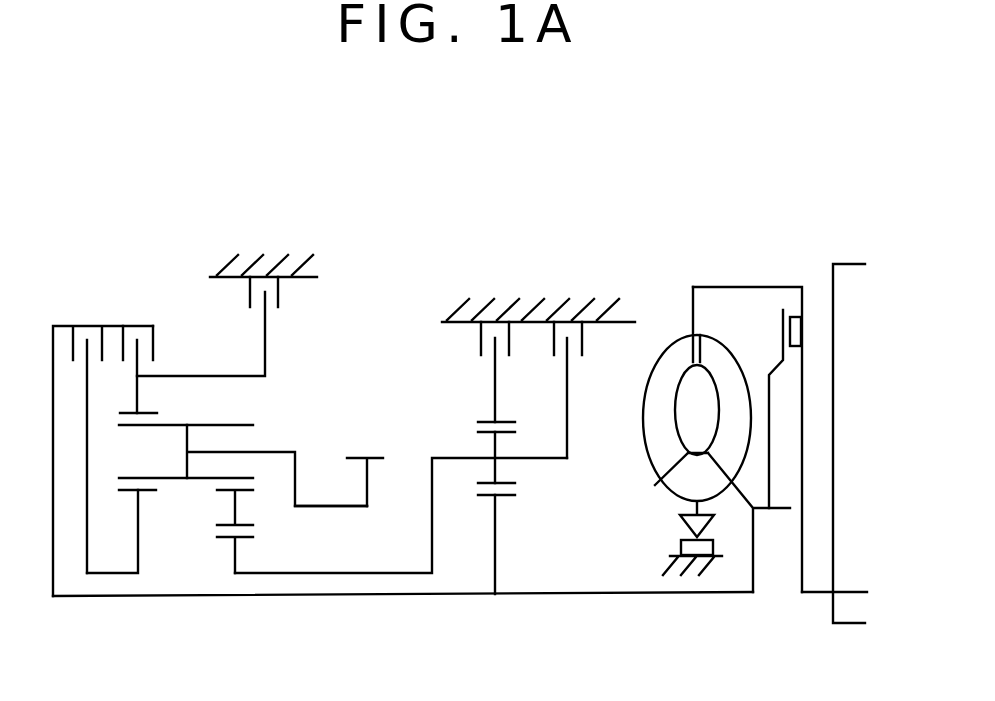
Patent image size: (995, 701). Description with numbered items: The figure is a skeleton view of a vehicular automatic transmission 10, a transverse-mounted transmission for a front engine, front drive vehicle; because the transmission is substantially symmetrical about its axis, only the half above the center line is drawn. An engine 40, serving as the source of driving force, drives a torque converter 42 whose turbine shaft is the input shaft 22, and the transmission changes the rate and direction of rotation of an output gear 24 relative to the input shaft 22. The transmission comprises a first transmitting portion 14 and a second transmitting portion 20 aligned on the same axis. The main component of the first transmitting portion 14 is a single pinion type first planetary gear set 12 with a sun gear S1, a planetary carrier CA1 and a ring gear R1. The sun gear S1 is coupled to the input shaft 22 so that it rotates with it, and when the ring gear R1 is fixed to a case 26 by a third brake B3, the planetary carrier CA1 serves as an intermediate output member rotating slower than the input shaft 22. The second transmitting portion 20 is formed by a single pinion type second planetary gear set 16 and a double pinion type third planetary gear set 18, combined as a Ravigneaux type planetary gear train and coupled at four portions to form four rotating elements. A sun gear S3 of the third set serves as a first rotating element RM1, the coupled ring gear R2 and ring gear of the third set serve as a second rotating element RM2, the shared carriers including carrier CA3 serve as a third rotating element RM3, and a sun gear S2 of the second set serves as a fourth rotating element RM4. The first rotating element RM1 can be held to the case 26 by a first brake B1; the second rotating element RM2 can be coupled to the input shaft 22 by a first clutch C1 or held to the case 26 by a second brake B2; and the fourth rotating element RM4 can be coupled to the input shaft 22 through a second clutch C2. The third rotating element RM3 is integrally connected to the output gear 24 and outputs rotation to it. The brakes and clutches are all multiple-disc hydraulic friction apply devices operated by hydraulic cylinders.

The vehicular automatic transmission 10 is at (604, 217).
The first planetary gear set 12 is at (497, 598).
The first transmitting portion 14 is at (423, 325).
The second planetary gear set 16 is at (137, 585).
The third planetary gear set 18 is at (242, 585).
The second transmitting portion 20 is at (325, 273).
The input shaft 22 is at (600, 593).
The output gear 24 is at (372, 455).
The case 26 is at (262, 268).
The engine 40 is at (852, 266).
The torque converter 42 is at (668, 325).
The first brake B1 is at (591, 345).
The second brake B2 is at (286, 295).
The third brake B3 is at (471, 345).
The first clutch C1 is at (103, 442).
The second clutch C2 is at (136, 350).
The ring gear R1 is at (502, 421).
The ring gear R2 is at (148, 413).
The sun gear S1 is at (503, 493).
The sun gear S2 is at (145, 491).
The sun gear S3 is at (238, 540).
The planetary carrier CA1 is at (567, 433).
The carrier CA3 is at (265, 452).
The first rotating element RM1 is at (344, 574).
The second rotating element RM2 is at (215, 374).
The third rotating element RM3 is at (330, 507).
The fourth rotating element RM4 is at (138, 553).